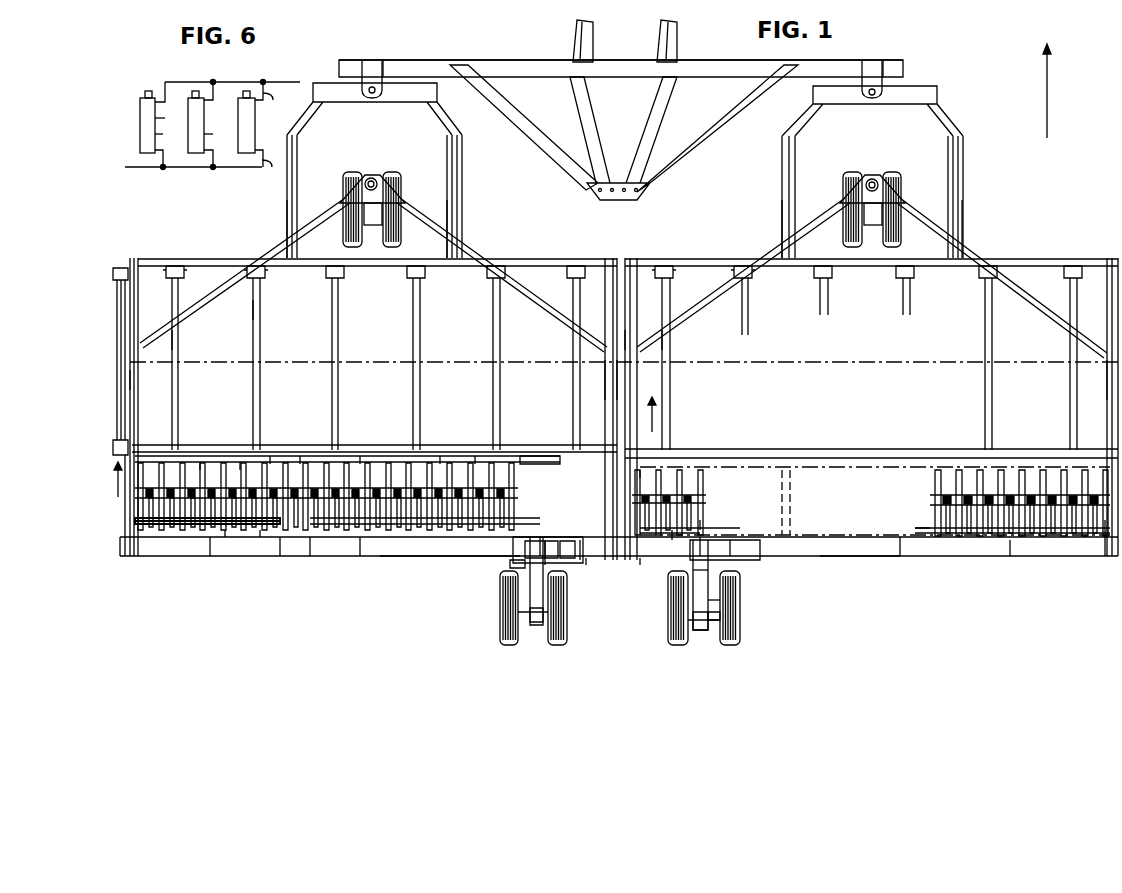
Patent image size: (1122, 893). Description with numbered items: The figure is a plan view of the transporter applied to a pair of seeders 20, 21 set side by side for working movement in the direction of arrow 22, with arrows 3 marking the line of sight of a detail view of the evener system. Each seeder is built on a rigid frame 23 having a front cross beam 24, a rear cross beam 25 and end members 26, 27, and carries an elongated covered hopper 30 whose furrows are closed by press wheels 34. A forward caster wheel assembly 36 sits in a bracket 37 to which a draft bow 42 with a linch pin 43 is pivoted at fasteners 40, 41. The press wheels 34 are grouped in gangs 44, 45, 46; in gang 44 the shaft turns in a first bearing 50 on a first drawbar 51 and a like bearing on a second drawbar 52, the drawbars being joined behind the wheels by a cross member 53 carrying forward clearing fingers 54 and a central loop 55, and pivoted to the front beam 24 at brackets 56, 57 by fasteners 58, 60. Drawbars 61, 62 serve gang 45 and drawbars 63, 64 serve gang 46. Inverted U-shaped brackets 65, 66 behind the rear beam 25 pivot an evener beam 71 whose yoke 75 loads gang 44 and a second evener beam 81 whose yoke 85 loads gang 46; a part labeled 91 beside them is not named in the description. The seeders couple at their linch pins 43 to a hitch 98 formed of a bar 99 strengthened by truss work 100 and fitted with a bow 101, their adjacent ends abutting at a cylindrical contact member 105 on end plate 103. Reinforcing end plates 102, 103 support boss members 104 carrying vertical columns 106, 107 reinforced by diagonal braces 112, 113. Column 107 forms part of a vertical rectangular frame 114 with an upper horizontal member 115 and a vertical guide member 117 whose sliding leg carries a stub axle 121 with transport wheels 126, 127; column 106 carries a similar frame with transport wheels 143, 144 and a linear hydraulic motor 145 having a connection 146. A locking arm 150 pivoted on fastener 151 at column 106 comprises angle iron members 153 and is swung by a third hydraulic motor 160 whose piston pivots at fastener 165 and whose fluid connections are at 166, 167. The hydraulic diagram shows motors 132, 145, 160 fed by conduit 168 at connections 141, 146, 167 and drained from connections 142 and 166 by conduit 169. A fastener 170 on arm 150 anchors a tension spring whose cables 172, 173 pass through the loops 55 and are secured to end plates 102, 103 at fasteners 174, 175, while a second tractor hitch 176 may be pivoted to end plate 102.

In FIG. 1, the section arrow 3 is at (384, 456).
In FIG. 1, the seeder 20 is at (510, 244).
In FIG. 1, the seeder 21 is at (696, 250).
In FIG. 1, the arrow 22 is at (1048, 92).
In FIG. 1, the rigid frame 23 is at (210, 254).
In FIG. 1, the front cross beam 24 is at (382, 270).
In FIG. 1, the rear cross beam 25 is at (352, 444).
In FIG. 1, the end member 26 is at (135, 380).
In FIG. 1, the end member 27 is at (607, 378).
In FIG. 1, the elongated covered hopper 30 is at (438, 358).
In FIG. 1, the press wheel 34 is at (190, 535).
In FIG. 1, the forward caster wheel assembly 36 is at (388, 172).
In FIG. 1, the bracket 37 is at (275, 243).
In FIG. 1, the fastener 40 is at (287, 224).
In FIG. 1, the fastener 41 is at (462, 220).
In FIG. 1, the draft bow 42 is at (462, 156).
In FIG. 1, the linch pin 43 is at (370, 96).
In FIG. 1, the wheel gang 44 is at (748, 478).
In FIG. 1, the wheel gang 45 is at (848, 478).
In FIG. 1, the wheel gang 46 is at (1030, 470).
In FIG. 1, the first bearing 50 is at (202, 460).
In FIG. 1, the first drawbar 51 is at (260, 356).
In FIG. 1, the second drawbar 52 is at (178, 352).
In FIG. 1, the cross member 53 is at (242, 535).
In FIG. 1, the clearing fingers 54 is at (278, 535).
In FIG. 1, the loop 55 is at (212, 540).
In FIG. 1, the bracket 56 is at (262, 284).
In FIG. 1, the bracket 57 is at (180, 278).
In FIG. 1, the fastener 58 is at (268, 280).
In FIG. 1, the fastener 60 is at (188, 266).
In FIG. 1, the drawbar 61 is at (412, 346).
In FIG. 1, the drawbar 62 is at (340, 334).
In FIG. 1, the drawbar 63 is at (572, 343).
In FIG. 1, the drawbar 64 is at (502, 376).
In FIG. 1, the bracket 65 is at (276, 456).
In FIG. 1, the bracket 66 is at (475, 456).
In FIG. 1, the evener beam 71 is at (304, 456).
In FIG. 1, the yoke 75 is at (212, 440).
In FIG. 1, the second evener beam 81 is at (440, 456).
In FIG. 1, the yoke 85 is at (550, 456).
In FIG. 1, the clamp 91 is at (372, 456).
In FIG. 1, the hitch 98 is at (541, 45).
In FIG. 1, the bar 99 is at (720, 70).
In FIG. 1, the truss work 100 is at (722, 138).
In FIG. 1, the bow 101 is at (668, 22).
In FIG. 1, the reinforcing end plate 102 is at (134, 398).
In FIG. 1, the reinforcing end plate 103 is at (612, 392).
In FIG. 1, the boss member 104 is at (298, 558).
In FIG. 1, the cylindrical contact member 105 is at (628, 330).
In FIG. 1, the vertical column 106 is at (525, 548).
In FIG. 1, the vertical column 107 is at (718, 556).
In FIG. 1, the diagonal brace 112 is at (400, 550).
In FIG. 1, the diagonal brace 113 is at (840, 556).
In FIG. 1, the vertical rectangular frame 114 is at (528, 590).
In FIG. 1, the upper horizontal member 115 is at (693, 592).
In FIG. 1, the vertical guide member 117 is at (720, 598).
In FIG. 1, the stub axle 121 is at (720, 614).
In FIG. 1, the transport wheel 126 is at (668, 636).
In FIG. 1, the transport wheel 127 is at (740, 636).
In FIG. 6, the hydraulic motor 132 is at (173, 111).
In FIG. 6, the connection 141 is at (165, 96).
In FIG. 6, the connection 142 is at (173, 130).
In FIG. 1, the transport wheel 143 is at (500, 634).
In FIG. 1, the transport wheel 144 is at (567, 644).
In FIG. 6, the linear hydraulic motor 145 is at (221, 130).
In FIG. 6, the connection 146 is at (213, 124).
In FIG. 1, the locking arm 150 is at (602, 562).
In FIG. 1, the fastener 151 is at (512, 566).
In FIG. 1, the angle iron member 153 is at (620, 570).
In FIG. 6, the third linear hydraulic motor 160 is at (255, 121).
In FIG. 1, the third linear hydraulic motor 160 is at (560, 558).
In FIG. 1, the fastener 165 is at (570, 570).
In FIG. 6, the connection 166 is at (270, 177).
In FIG. 6, the connection 167 is at (284, 97).
In FIG. 6, the conduit 168 is at (284, 73).
In FIG. 6, the conduit 169 is at (190, 168).
In FIG. 1, the fastener 170 is at (640, 562).
In FIG. 1, the cable 172 is at (450, 535).
In FIG. 1, the cable 173 is at (750, 530).
In FIG. 1, the fastener 174 is at (134, 535).
In FIG. 1, the fastener 175 is at (1104, 536).
In FIG. 1, the second tractor hitch 176 is at (122, 326).